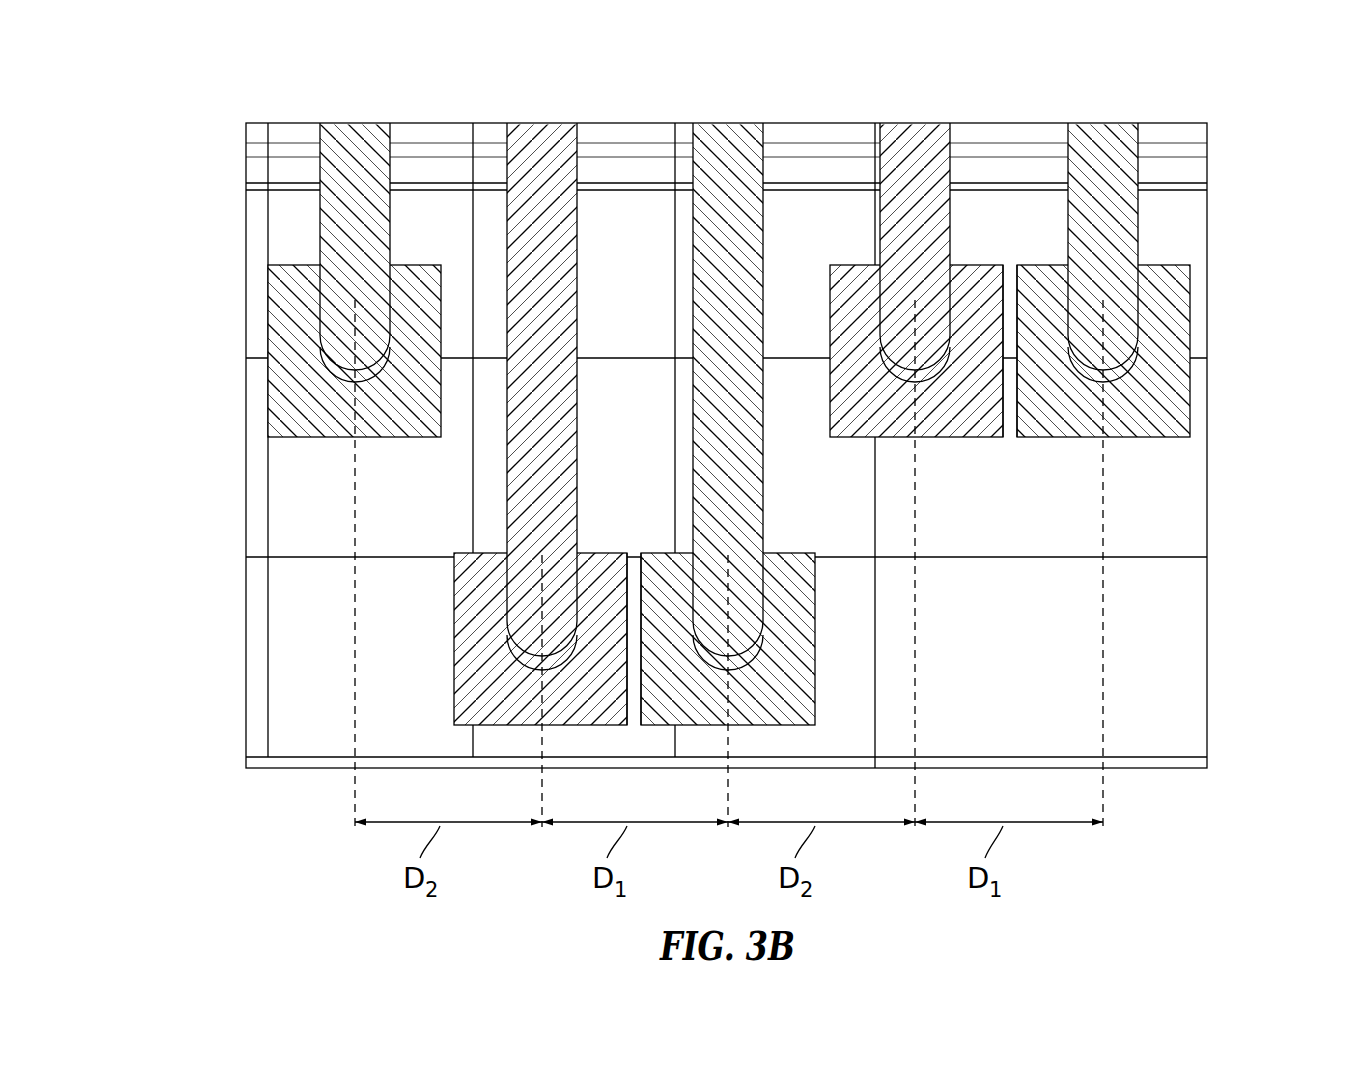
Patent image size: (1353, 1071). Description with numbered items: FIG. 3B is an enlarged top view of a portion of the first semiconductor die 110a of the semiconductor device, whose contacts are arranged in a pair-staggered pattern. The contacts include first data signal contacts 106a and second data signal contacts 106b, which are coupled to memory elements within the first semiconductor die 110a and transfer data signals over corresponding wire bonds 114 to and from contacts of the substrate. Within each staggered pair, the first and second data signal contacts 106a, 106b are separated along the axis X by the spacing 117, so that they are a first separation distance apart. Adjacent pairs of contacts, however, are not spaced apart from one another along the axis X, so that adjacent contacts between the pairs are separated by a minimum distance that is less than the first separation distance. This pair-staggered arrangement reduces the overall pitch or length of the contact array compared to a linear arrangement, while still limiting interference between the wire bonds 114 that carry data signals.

The wire bonds 114 is at (368, 153).
The first data signal contacts 106a is at (597, 572).
The second data signal contacts 106b is at (320, 397).
The first semiconductor die 110a is at (1170, 657).
The spacing 117 is at (1008, 445).